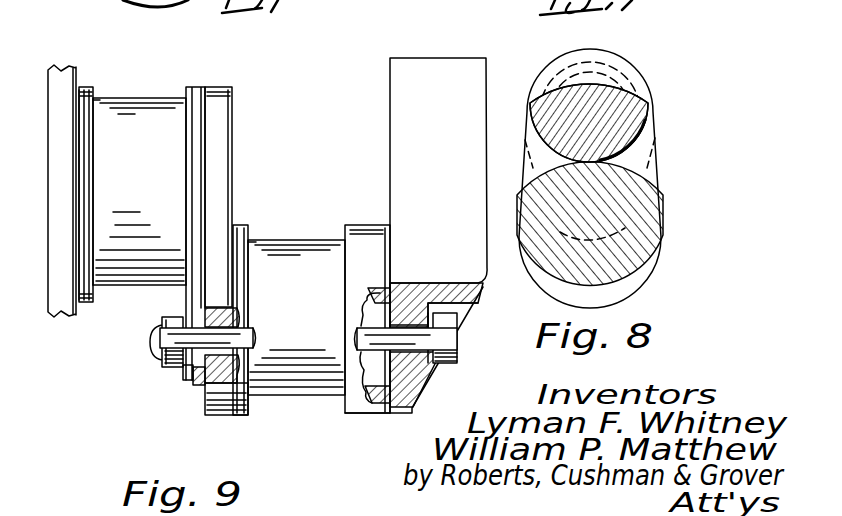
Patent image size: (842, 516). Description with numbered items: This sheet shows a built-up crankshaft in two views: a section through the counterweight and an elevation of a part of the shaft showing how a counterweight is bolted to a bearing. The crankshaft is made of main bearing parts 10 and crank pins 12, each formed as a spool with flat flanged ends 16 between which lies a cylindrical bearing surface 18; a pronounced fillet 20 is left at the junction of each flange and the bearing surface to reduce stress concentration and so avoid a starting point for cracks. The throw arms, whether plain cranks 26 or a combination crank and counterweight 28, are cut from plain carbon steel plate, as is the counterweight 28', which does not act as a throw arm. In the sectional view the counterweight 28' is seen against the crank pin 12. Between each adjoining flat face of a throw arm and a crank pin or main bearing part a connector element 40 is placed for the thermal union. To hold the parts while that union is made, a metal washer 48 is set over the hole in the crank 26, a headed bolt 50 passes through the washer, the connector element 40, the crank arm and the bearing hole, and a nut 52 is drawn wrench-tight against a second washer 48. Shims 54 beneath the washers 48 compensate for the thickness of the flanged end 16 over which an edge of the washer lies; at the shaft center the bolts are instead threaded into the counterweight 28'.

In FIG. 9, the main bearing part 10 is at (127, 294).
In FIG. 9, the crank pin 12 is at (289, 253).
In FIG. 8, the crank pin 12 is at (628, 78).
In FIG. 9, the flat flanged end 16 is at (89, 85).
In FIG. 9, the cylindrical bearing surface 18 is at (151, 100).
In FIG. 9, the fillet 20 is at (96, 101).
In FIG. 9, the crank 26 is at (58, 108).
In FIG. 9, the combination crank and counterweight 28 is at (416, 219).
In FIG. 8, the counterweight 28' is at (622, 178).
In FIG. 9, the connector element 40 is at (78, 173).
In FIG. 9, the metal washer 48 is at (188, 384).
In FIG. 9, the headed bolt 50 is at (378, 335).
In FIG. 9, the nut 52 is at (165, 352).
In FIG. 9, the shim 54 is at (196, 386).